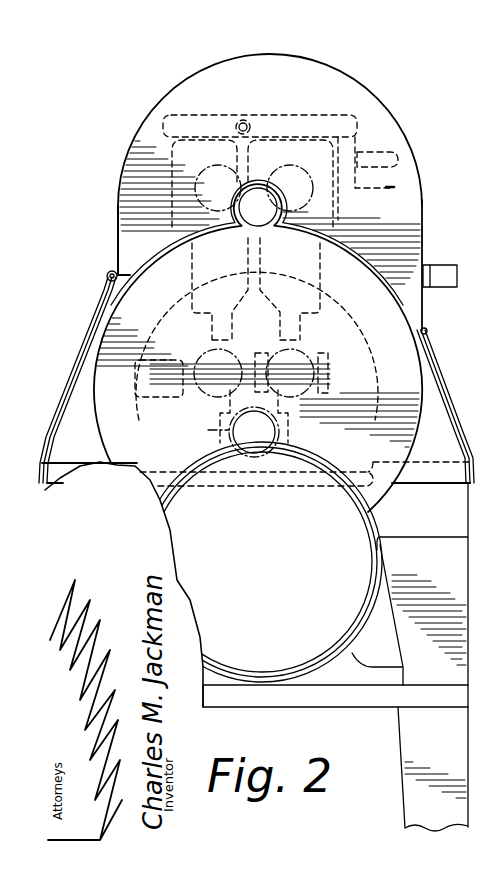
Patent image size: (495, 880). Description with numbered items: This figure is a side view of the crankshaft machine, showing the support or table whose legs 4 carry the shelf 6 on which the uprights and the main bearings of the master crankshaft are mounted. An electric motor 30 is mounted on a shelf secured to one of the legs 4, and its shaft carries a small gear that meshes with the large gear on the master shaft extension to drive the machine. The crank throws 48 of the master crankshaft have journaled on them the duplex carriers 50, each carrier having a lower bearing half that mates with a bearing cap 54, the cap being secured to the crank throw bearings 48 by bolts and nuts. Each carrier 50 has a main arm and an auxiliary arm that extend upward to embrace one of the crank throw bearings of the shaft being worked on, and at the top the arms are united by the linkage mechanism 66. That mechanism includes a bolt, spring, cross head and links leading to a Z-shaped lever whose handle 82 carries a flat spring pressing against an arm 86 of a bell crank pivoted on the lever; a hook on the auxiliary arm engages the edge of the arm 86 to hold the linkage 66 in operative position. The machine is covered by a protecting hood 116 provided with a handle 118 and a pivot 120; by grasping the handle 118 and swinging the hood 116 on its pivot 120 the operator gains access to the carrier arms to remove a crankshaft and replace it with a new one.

The legs 4 is at (415, 728).
The shelf 6 is at (277, 703).
The electric motor 30 is at (336, 646).
The crank throws 48 is at (317, 375).
The duplex carriers 50 is at (256, 289).
The bearing cap 54 is at (300, 417).
The linkage mechanism 66 is at (305, 123).
The handle 82 is at (373, 157).
The arm of bell crank 86 is at (392, 183).
The protecting hood 116 is at (191, 96).
The handle 118 is at (440, 274).
The pivot 120 is at (106, 273).